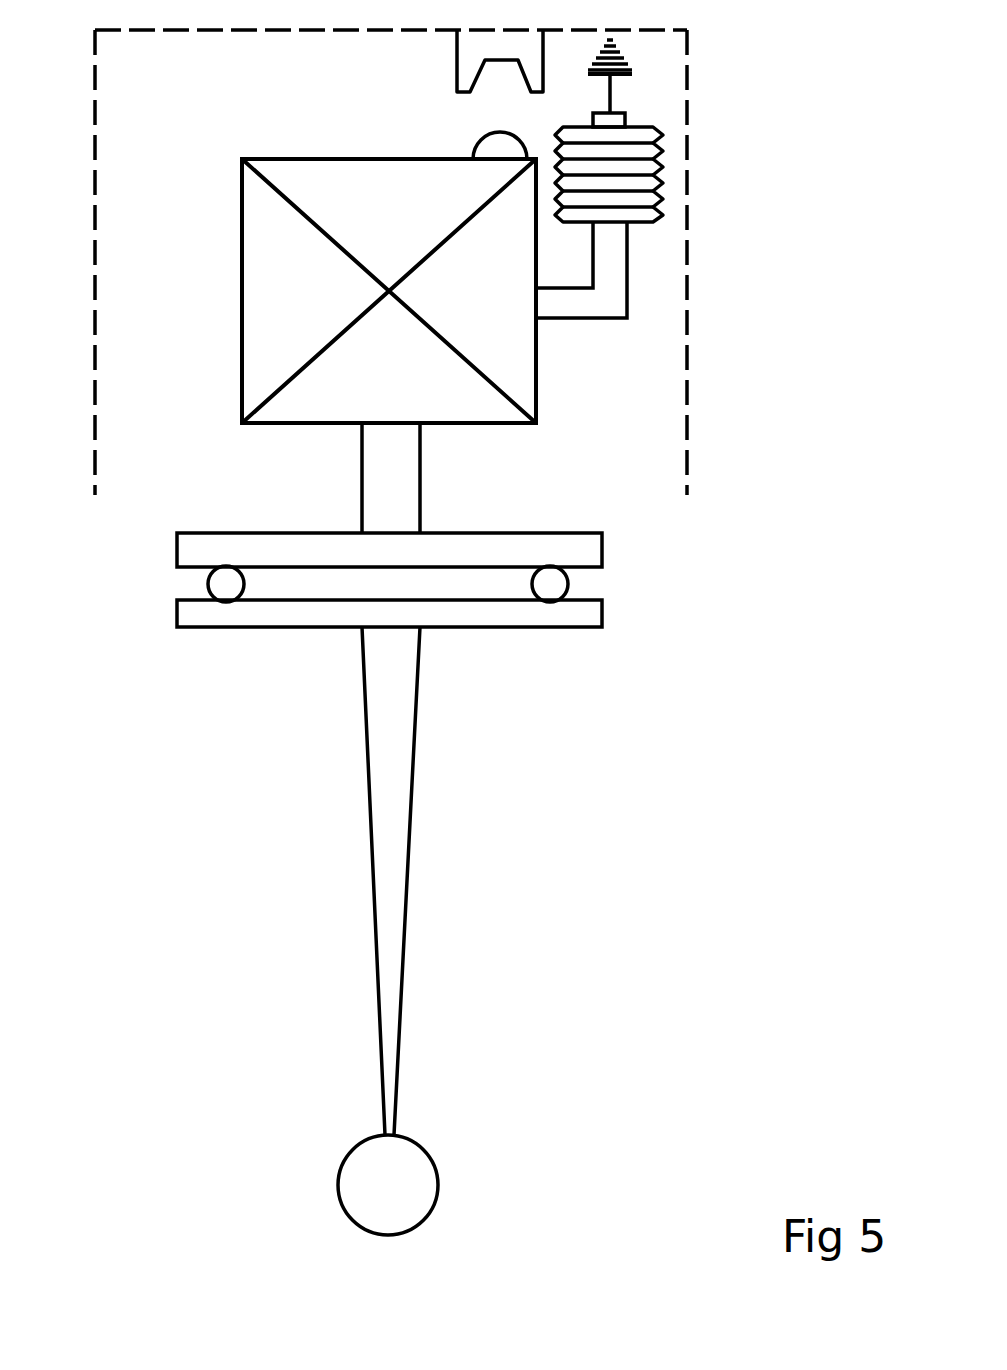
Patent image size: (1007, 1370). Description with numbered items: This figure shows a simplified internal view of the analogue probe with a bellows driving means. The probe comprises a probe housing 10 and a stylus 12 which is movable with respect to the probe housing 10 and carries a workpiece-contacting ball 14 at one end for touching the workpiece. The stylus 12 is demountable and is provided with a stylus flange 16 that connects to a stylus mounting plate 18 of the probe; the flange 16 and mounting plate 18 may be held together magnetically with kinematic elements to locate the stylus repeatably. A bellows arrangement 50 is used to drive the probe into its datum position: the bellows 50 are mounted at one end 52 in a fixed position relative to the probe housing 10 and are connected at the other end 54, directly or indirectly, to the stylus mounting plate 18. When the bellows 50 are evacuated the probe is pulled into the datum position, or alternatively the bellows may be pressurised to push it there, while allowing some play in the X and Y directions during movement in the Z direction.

The probe housing 10 is at (690, 448).
The stylus 12 is at (398, 768).
The workpiece-contacting ball 14 is at (410, 1160).
The stylus flange 16 is at (220, 612).
The stylus mounting plate 18 is at (195, 568).
The bellows 50 is at (672, 175).
The one end of bellows 52 is at (642, 122).
The other end of bellows 54 is at (637, 230).